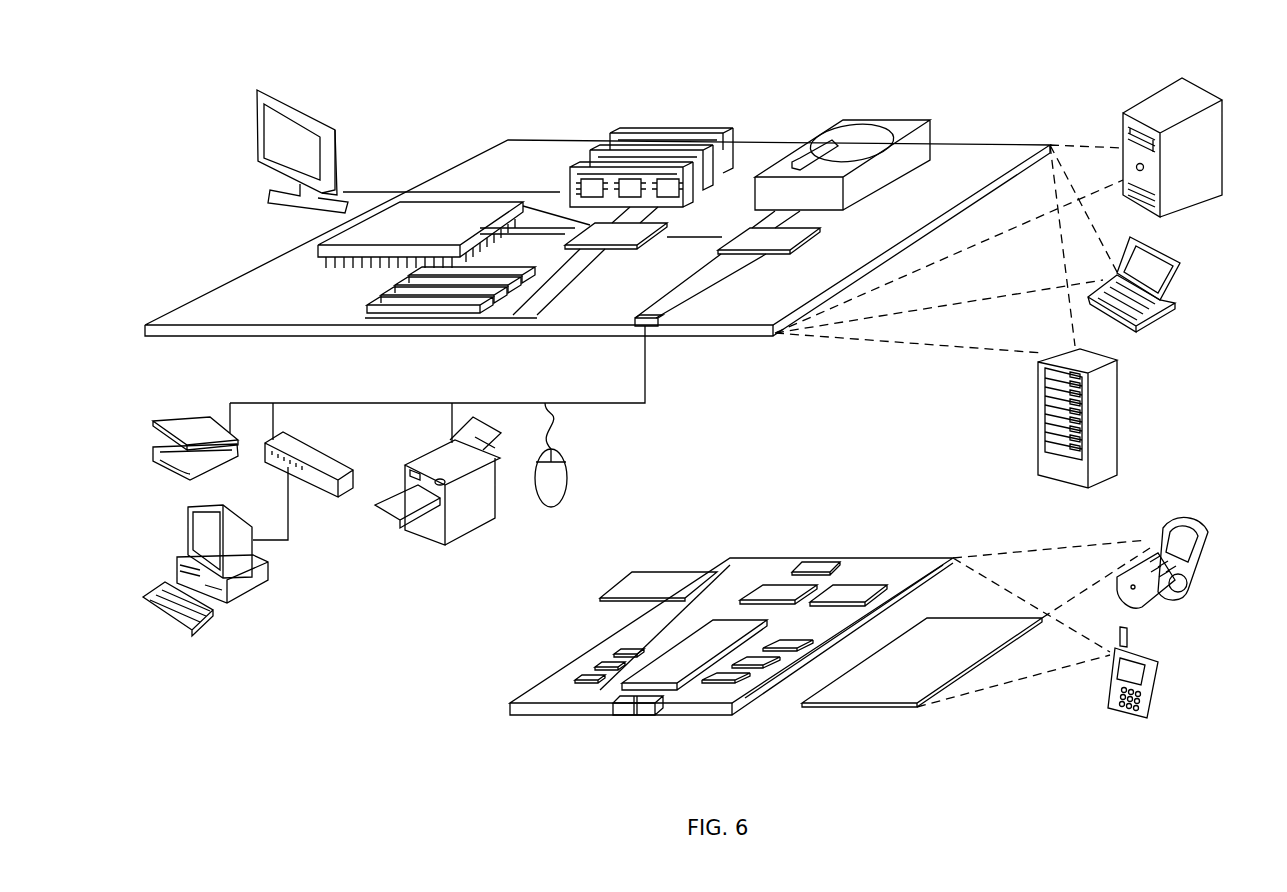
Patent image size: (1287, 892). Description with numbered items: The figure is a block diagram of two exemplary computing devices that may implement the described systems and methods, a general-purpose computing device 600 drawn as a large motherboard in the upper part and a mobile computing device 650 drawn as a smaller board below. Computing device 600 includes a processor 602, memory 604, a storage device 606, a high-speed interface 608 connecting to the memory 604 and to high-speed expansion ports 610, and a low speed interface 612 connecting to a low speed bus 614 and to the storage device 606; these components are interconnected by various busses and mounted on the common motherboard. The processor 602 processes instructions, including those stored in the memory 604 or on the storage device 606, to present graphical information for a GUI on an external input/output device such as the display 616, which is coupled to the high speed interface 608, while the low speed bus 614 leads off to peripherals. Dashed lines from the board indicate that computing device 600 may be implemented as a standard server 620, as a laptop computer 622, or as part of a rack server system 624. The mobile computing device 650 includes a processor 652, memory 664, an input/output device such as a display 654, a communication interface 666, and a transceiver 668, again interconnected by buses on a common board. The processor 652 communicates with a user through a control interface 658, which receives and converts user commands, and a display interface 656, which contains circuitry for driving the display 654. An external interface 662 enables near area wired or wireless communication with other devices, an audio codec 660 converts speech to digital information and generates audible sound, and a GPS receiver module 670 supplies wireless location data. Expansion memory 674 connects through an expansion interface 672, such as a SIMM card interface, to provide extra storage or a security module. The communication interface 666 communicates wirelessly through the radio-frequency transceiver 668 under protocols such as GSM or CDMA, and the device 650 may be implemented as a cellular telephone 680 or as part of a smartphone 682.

The computing device 600 is at (438, 116).
The processor 602 is at (318, 247).
The memory 604 is at (618, 135).
The storage device 606 is at (838, 120).
The high-speed interface 608 is at (598, 238).
The high-speed expansion ports 610 is at (367, 303).
The low speed interface 612 is at (745, 240).
The low speed bus 614 is at (656, 327).
The display 616 is at (260, 96).
The standard server 620 is at (1123, 124).
The laptop computer 622 is at (1180, 262).
The rack server system 624 is at (1038, 441).
The computing device 650 is at (488, 718).
The processor 652 is at (670, 673).
The display 654 is at (885, 692).
The display interface 656 is at (730, 681).
The control interface 658 is at (758, 660).
The audio codec 660 is at (785, 641).
The external interface 662 is at (637, 707).
The memory 664 is at (590, 666).
The communication interface 666 is at (778, 592).
The transceiver 668 is at (850, 592).
The GPS receiver module 670 is at (822, 566).
The expansion interface 672 is at (710, 570).
The expansion memory 674 is at (648, 573).
The cellular telephone 680 is at (1163, 526).
The smartphone 682 is at (1113, 687).